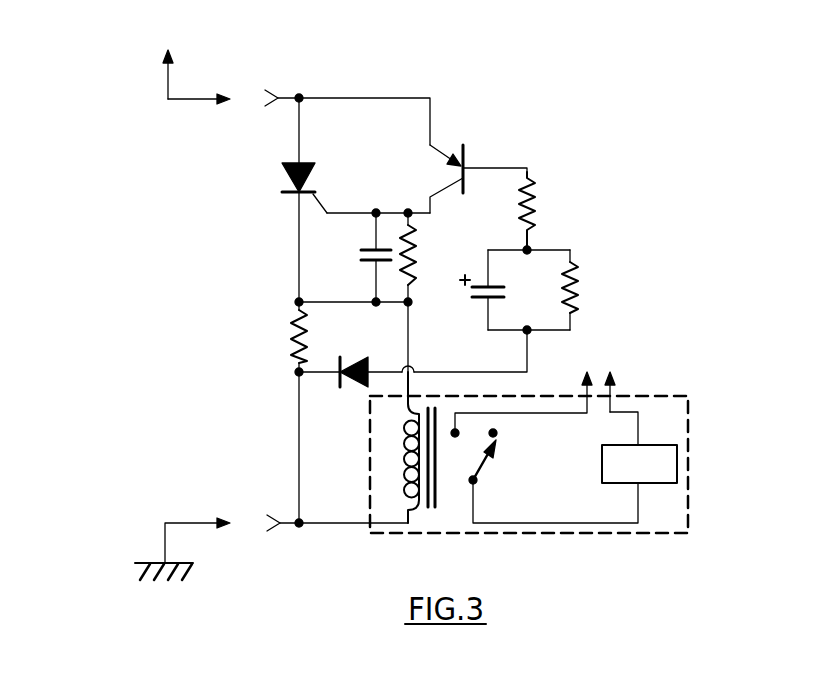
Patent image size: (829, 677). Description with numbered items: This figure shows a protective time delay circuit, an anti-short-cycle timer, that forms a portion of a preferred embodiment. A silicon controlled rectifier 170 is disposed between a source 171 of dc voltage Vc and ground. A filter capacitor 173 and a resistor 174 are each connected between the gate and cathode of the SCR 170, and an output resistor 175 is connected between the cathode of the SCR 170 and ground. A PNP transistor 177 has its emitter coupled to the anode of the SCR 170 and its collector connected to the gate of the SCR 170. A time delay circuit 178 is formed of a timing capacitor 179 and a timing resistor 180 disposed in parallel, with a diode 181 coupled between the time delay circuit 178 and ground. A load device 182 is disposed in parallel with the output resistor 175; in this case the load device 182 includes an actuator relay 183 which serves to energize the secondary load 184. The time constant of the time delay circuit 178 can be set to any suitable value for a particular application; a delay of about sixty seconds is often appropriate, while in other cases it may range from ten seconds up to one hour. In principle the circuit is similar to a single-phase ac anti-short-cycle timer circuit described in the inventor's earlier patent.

The silicon controlled rectifier 170 is at (312, 172).
The source of dc voltage 171 is at (171, 84).
The capacitor CL 173 is at (367, 246).
The resistor 174 is at (416, 243).
The output resistor 175 is at (293, 322).
The PNP transistor 177 is at (513, 166).
The time delay circuit 178 is at (550, 258).
The timing capacitor 179 is at (480, 281).
The timing resistor 180 is at (580, 290).
The diode 181 is at (356, 358).
The load device 182 is at (549, 473).
The actuator relay 183 is at (424, 506).
The secondary load 184 is at (672, 484).